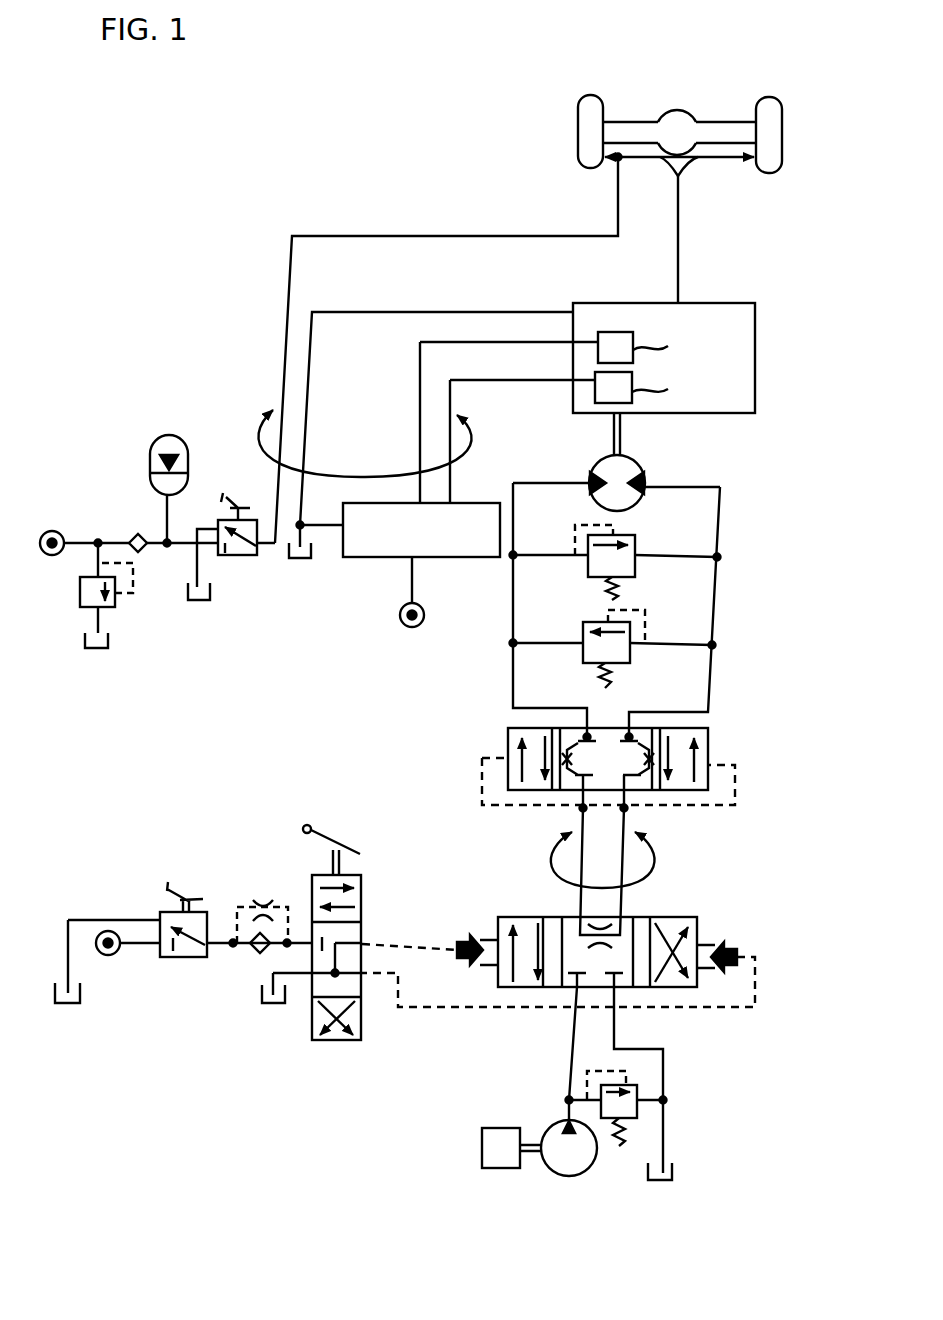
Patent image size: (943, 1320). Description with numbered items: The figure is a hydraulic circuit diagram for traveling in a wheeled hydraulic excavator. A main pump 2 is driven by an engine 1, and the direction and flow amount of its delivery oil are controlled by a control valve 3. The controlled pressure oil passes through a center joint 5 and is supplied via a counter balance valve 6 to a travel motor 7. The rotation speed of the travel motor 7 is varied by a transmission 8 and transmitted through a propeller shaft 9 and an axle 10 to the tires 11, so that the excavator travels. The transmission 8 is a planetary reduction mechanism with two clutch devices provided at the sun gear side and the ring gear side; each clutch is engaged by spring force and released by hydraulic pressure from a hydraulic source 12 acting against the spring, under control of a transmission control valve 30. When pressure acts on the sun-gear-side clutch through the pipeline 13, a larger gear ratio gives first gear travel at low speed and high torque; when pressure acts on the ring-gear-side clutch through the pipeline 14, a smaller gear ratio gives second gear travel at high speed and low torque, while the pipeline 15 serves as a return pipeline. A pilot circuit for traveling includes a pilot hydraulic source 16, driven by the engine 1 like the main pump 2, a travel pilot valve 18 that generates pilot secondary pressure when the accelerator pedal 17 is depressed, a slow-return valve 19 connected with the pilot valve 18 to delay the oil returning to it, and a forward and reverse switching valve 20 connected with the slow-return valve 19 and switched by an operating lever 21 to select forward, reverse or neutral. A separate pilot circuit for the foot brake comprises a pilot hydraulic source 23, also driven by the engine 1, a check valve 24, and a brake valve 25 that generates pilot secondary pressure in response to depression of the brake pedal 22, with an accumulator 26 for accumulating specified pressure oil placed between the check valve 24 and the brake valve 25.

The engine 1 is at (482, 1128).
The main pump 2 is at (553, 1128).
The control valve 3 is at (690, 1007).
The center joint 5 is at (466, 446).
The counter balance valve 6 is at (508, 740).
The travel motor 7 is at (645, 470).
The transmission 8 is at (710, 416).
The propeller shaft 9 is at (678, 275).
The axle 10 is at (688, 118).
The tires 11 is at (575, 140).
The hydraulic source 12 is at (400, 618).
The pipeline 13 is at (420, 398).
The pipeline 14 is at (513, 380).
The return pipeline 15 is at (308, 366).
The pilot hydraulic source 16 is at (108, 956).
The accelerator pedal 17 is at (182, 888).
The travel pilot valve 18 is at (192, 957).
The slow-return valve 19 is at (276, 905).
The forward and reverse switching valve 20 is at (361, 1025).
The operating lever 21 is at (332, 842).
The brake pedal 22 is at (238, 505).
The pilot hydraulic source 23 is at (50, 556).
The check valve 24 is at (132, 536).
The brake valve 25 is at (236, 555).
The accumulator 26 is at (150, 470).
The transmission control valve 30 is at (455, 557).